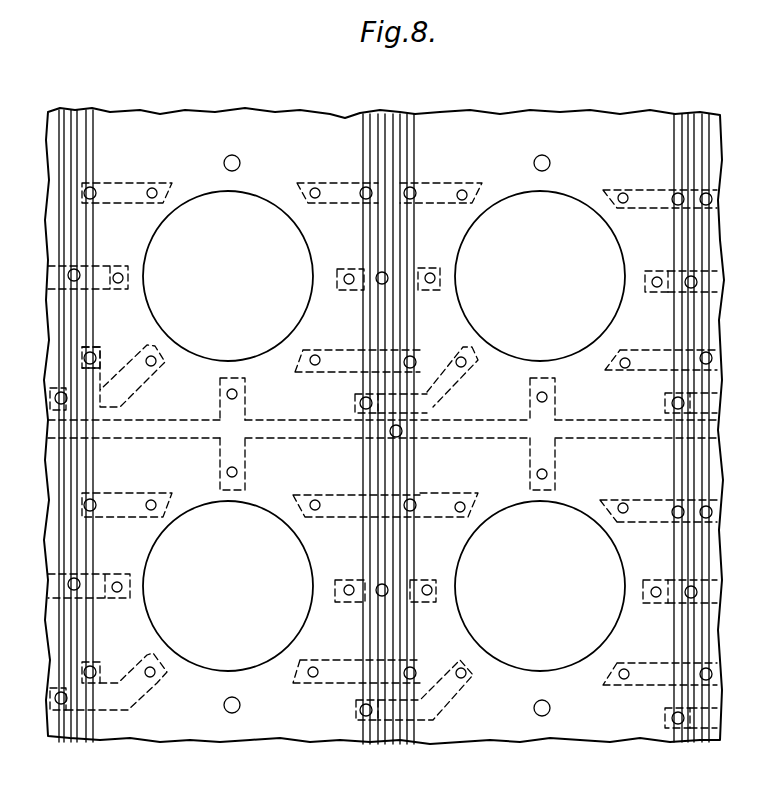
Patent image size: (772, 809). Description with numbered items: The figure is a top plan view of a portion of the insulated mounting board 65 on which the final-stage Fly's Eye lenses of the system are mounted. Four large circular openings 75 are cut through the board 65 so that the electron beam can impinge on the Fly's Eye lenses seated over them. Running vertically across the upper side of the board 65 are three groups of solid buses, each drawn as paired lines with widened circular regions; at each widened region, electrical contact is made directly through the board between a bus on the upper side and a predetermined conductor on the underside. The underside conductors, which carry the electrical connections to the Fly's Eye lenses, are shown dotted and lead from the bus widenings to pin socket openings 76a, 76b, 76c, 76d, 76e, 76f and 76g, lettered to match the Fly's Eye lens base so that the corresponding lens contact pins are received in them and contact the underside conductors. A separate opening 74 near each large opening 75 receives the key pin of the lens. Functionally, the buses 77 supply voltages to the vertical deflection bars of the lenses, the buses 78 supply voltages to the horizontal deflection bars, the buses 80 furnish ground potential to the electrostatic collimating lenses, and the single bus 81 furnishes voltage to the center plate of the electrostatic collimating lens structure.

The insulated mounting board 65 is at (632, 715).
The opening 74 is at (239, 158).
The opening 75 is at (242, 292).
The pin socket opening 76a is at (153, 501).
The pin socket opening 76b is at (153, 188).
The pin socket opening 76c is at (147, 358).
The pin socket opening 76d is at (315, 188).
The pin socket opening 76e is at (237, 395).
The pin socket opening 76f is at (118, 267).
The pin socket opening 76g is at (347, 273).
The bus 77 is at (97, 115).
The bus 78 is at (60, 110).
The bus 80 is at (75, 108).
The bus 81 is at (403, 115).